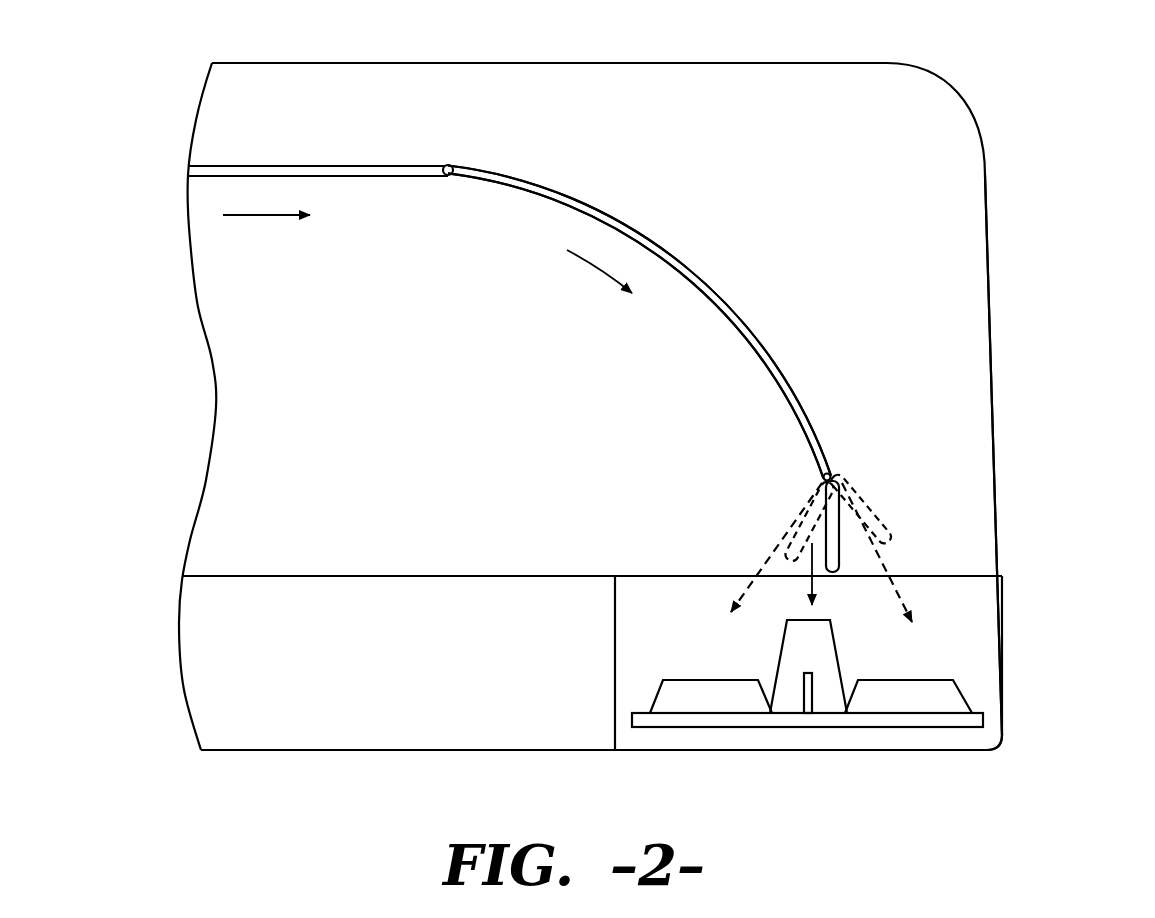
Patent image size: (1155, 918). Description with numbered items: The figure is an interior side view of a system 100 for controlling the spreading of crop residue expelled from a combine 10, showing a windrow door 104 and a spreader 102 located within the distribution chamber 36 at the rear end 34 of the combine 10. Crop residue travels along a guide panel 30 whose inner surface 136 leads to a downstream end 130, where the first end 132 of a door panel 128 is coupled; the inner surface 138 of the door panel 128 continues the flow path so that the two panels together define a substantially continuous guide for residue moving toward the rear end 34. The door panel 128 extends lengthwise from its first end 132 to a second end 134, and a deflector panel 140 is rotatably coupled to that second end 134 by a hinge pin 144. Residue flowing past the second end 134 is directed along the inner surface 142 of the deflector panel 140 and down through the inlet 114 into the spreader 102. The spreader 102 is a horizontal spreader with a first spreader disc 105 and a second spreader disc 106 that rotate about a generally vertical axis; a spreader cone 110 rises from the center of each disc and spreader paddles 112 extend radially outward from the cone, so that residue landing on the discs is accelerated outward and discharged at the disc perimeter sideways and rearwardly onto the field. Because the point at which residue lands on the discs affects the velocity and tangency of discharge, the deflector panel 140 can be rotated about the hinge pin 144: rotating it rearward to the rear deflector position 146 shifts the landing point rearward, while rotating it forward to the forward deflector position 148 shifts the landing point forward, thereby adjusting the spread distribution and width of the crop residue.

The combine 10 is at (1035, 132).
The guide panel 30 is at (313, 160).
The rear end 34 is at (992, 318).
The distribution chamber 36 is at (407, 436).
The system 100 is at (790, 279).
The spreader 102 is at (1003, 645).
The windrow door 104 is at (728, 456).
The first spreader disc 105 is at (869, 756).
The second spreader disc 106 is at (930, 730).
The spreader cone 110 is at (820, 655).
The spreader paddles 112 is at (723, 678).
The inlet 114 is at (665, 574).
The door panel 128 is at (684, 262).
The downstream end 130 is at (415, 162).
The first end 132 is at (468, 166).
The second end 134 is at (817, 450).
The inner surface 136 is at (373, 178).
The inner surface 138 is at (517, 197).
The deflector panel 140 is at (853, 523).
The inner surface 142 is at (820, 525).
The hinge pin 144 is at (832, 473).
The rear deflector position 146 is at (873, 525).
The forward deflector position 148 is at (790, 540).